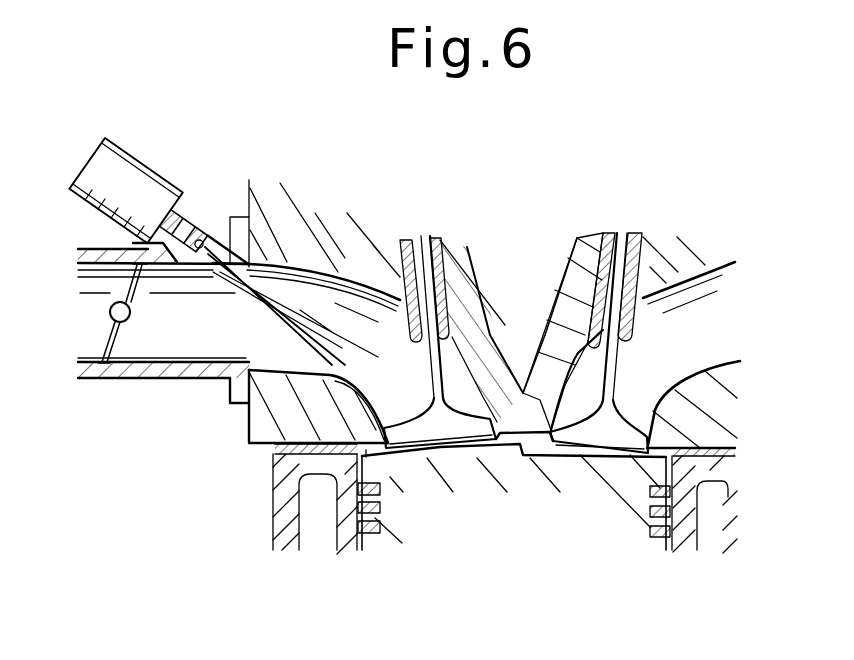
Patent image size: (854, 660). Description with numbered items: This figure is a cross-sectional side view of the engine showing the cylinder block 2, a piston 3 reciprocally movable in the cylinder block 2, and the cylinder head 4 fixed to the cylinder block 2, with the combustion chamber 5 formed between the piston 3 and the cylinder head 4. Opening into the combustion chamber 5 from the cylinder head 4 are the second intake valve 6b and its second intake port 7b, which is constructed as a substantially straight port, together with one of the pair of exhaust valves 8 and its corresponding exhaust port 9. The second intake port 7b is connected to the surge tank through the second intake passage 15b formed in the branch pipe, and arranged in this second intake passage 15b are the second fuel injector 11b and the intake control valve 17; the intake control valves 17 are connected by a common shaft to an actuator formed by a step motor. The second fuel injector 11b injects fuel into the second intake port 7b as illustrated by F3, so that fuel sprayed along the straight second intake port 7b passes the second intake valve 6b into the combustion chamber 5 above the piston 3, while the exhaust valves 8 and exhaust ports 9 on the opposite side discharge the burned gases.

The cylinder block 2 is at (688, 518).
The piston 3 is at (620, 487).
The cylinder head 4 is at (378, 250).
The combustion chamber 5 is at (527, 455).
The second intake valve 6b is at (477, 298).
The second intake port 7b is at (337, 288).
The exhaust valves 8 is at (600, 330).
The exhaust ports 9 is at (680, 296).
The second fuel injector 11b is at (147, 176).
The second intake passage 15b is at (165, 348).
The intake control valve 17 is at (103, 366).
The fuel injection by second fuel injector F3 is at (290, 313).